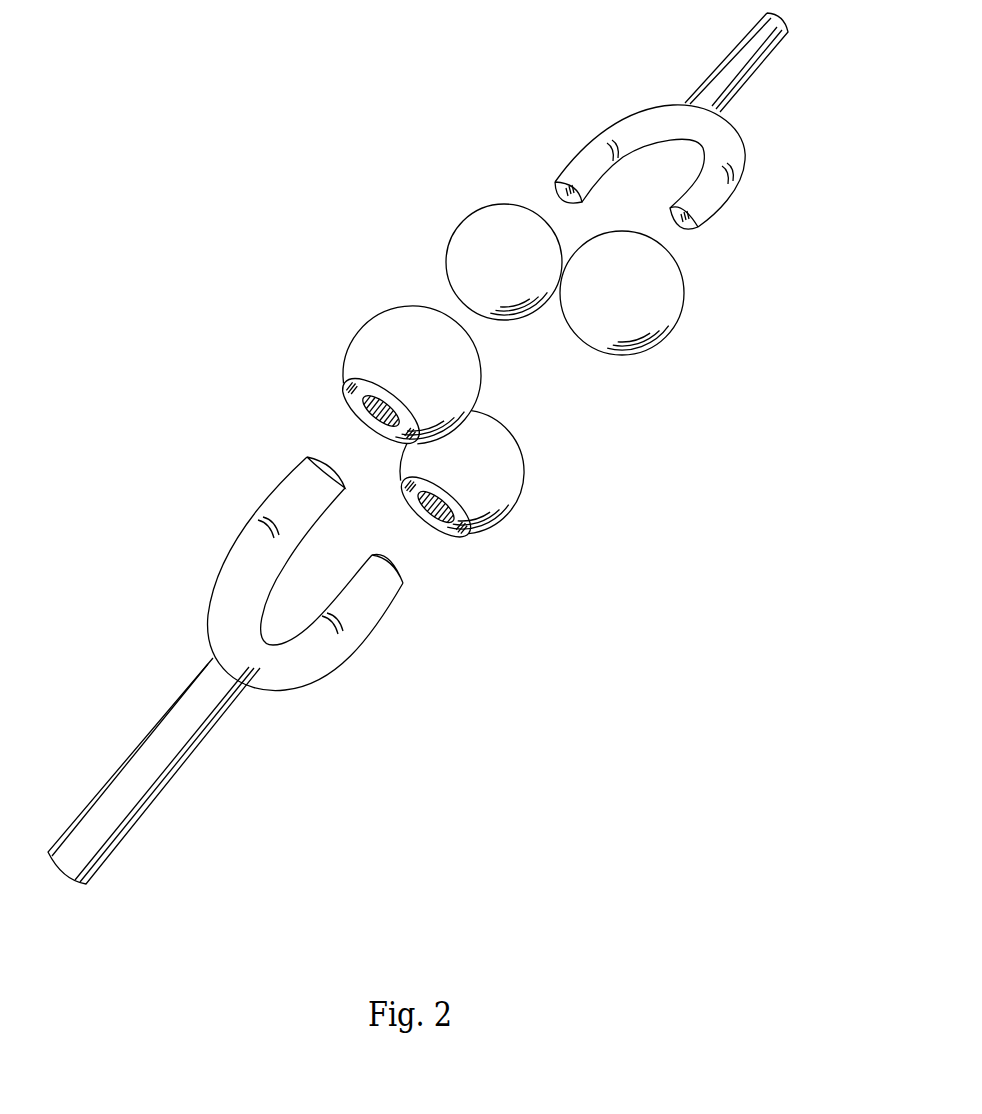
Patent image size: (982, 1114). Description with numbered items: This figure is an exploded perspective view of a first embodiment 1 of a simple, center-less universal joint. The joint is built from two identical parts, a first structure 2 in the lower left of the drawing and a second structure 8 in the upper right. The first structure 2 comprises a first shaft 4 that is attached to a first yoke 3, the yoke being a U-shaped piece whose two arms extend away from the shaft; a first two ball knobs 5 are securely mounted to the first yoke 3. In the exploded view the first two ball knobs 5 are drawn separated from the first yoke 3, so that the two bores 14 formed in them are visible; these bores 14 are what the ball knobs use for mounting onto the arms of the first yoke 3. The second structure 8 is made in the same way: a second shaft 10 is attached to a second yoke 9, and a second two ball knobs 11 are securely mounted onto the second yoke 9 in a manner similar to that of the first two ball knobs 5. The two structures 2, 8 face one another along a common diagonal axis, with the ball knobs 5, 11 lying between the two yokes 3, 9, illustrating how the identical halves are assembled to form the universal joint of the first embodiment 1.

The first embodiment 1 is at (734, 814).
The first structure 2 is at (147, 312).
The first yoke 3 is at (232, 598).
The first shaft 4 is at (172, 743).
The first two ball knobs 5 is at (422, 429).
The second structure 8 is at (406, 71).
The second yoke 9 is at (672, 136).
The second shaft 10 is at (733, 71).
The second two ball knobs 11 is at (490, 271).
The bores 14 is at (375, 420).